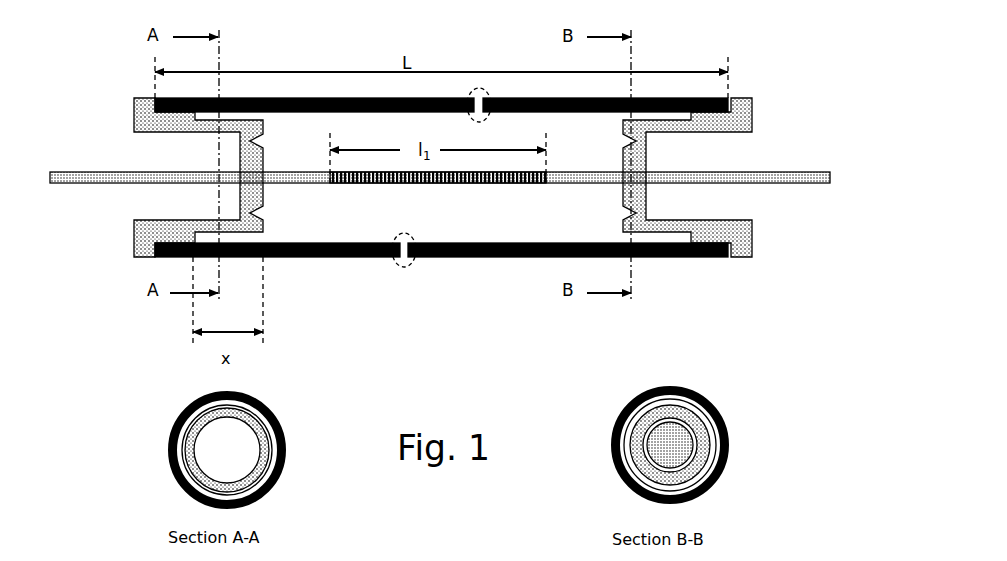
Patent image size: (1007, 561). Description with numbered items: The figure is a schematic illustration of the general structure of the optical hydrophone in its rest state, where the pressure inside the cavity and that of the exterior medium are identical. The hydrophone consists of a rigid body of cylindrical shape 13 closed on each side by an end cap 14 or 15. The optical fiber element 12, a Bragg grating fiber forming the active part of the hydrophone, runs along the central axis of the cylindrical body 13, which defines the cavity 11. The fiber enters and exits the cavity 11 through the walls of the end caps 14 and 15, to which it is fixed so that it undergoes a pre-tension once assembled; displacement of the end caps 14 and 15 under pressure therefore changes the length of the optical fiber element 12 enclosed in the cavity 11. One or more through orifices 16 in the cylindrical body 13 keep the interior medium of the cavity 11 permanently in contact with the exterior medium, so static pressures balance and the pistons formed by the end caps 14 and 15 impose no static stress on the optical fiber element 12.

The cavity 11 is at (440, 320).
The optical fiber element 12 is at (438, 256).
The rigid body of cylindrical shape 13 is at (479, 262).
The end cap 14 is at (177, 311).
The end cap 15 is at (659, 306).
The through orifices 16 is at (458, 135).